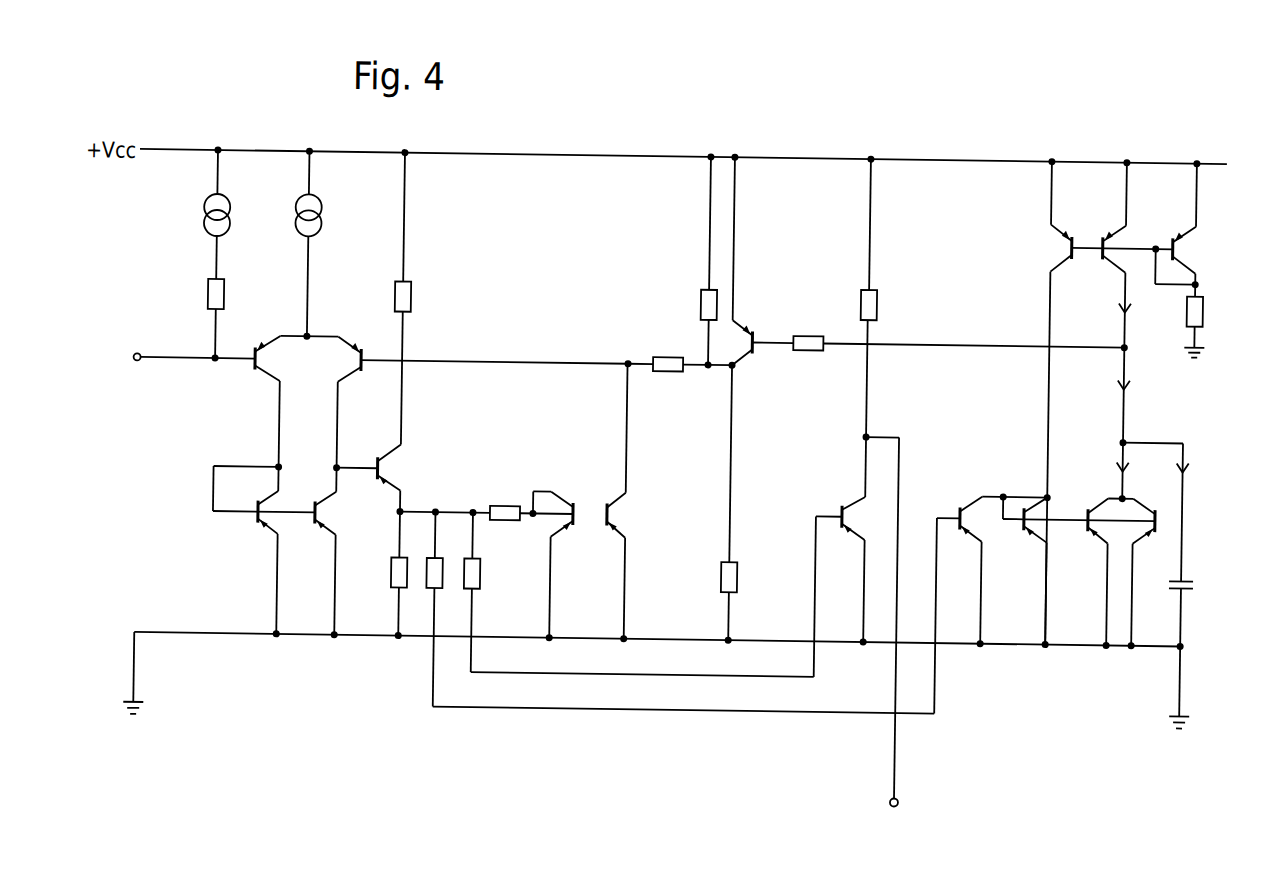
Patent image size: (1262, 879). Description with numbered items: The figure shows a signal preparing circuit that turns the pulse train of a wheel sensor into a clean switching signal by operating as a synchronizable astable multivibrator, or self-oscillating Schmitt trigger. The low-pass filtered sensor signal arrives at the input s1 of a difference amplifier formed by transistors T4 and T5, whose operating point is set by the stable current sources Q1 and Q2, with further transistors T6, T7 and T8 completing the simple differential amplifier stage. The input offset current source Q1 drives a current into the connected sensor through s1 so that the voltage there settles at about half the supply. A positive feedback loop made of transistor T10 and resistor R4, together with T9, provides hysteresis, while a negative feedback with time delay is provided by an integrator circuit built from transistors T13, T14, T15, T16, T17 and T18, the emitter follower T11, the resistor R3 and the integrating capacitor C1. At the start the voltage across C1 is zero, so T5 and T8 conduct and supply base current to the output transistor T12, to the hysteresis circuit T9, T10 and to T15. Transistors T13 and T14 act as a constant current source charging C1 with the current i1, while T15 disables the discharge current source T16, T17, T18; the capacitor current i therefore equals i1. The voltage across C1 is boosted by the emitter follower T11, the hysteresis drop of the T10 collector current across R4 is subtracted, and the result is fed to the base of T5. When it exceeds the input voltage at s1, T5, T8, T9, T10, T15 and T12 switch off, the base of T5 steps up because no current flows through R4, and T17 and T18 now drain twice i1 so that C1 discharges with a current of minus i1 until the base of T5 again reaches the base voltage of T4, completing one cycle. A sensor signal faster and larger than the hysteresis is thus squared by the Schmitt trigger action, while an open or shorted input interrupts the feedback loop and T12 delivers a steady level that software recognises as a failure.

The input offset current source Q1 is at (203, 211).
The stable current source Q2 is at (295, 211).
The input s1 is at (181, 360).
The difference amplifier transistor T4 is at (256, 351).
The difference amplifier transistor T5 is at (363, 350).
The differential amplifier transistor T6 is at (264, 524).
The differential amplifier transistor T7 is at (321, 524).
The differential amplifier transistor T8 is at (380, 460).
The hysteresis circuit transistor T9 is at (580, 524).
The hysteresis circuit transistor T10 is at (618, 522).
The emitter follower T11 is at (759, 349).
The output transistor T12 is at (845, 521).
The charging current source transistor T13 is at (1185, 238).
The charging current source transistor T14 is at (1099, 249).
The integrator circuit transistor T15 is at (966, 522).
The discharge current source transistor T16 is at (1030, 522).
The discharge current source transistor T17 is at (1094, 522).
The discharge current source transistor T18 is at (1161, 522).
The resistor R3 is at (1206, 328).
The positive feedback resistor R4 is at (677, 372).
The integrating capacitor C1 is at (1170, 525).
The charging current i1 is at (1131, 386).
The capacitor current i is at (1188, 496).